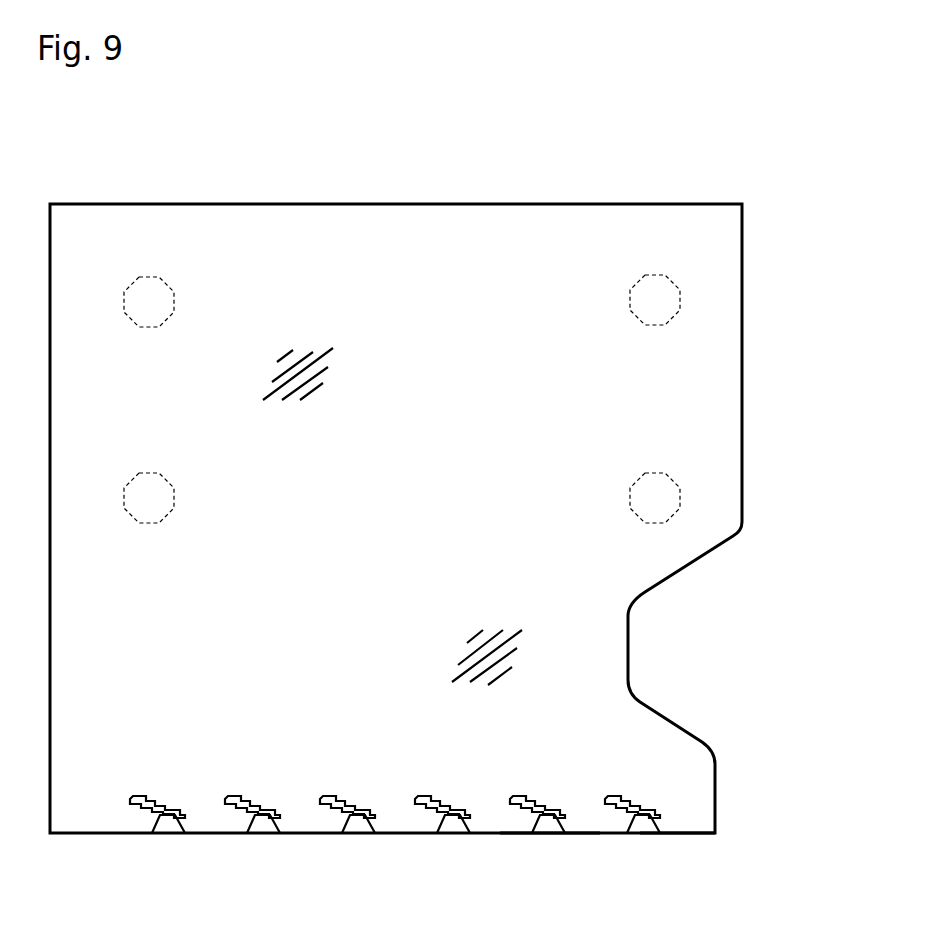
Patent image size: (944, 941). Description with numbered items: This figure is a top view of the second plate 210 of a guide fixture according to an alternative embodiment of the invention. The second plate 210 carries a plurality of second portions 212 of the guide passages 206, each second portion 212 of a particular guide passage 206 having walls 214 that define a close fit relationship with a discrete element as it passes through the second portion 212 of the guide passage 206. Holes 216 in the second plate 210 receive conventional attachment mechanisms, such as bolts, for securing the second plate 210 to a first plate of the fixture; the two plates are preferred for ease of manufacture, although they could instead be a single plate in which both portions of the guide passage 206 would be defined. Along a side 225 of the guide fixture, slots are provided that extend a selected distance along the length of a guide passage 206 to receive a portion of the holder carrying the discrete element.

The second plate 210 is at (763, 343).
The holes 216 is at (149, 277).
The walls 214 is at (466, 803).
The guide passage 206 is at (633, 800).
The second portion of the guide passage 212 is at (552, 850).
The side of the guide fixture 225 is at (690, 834).